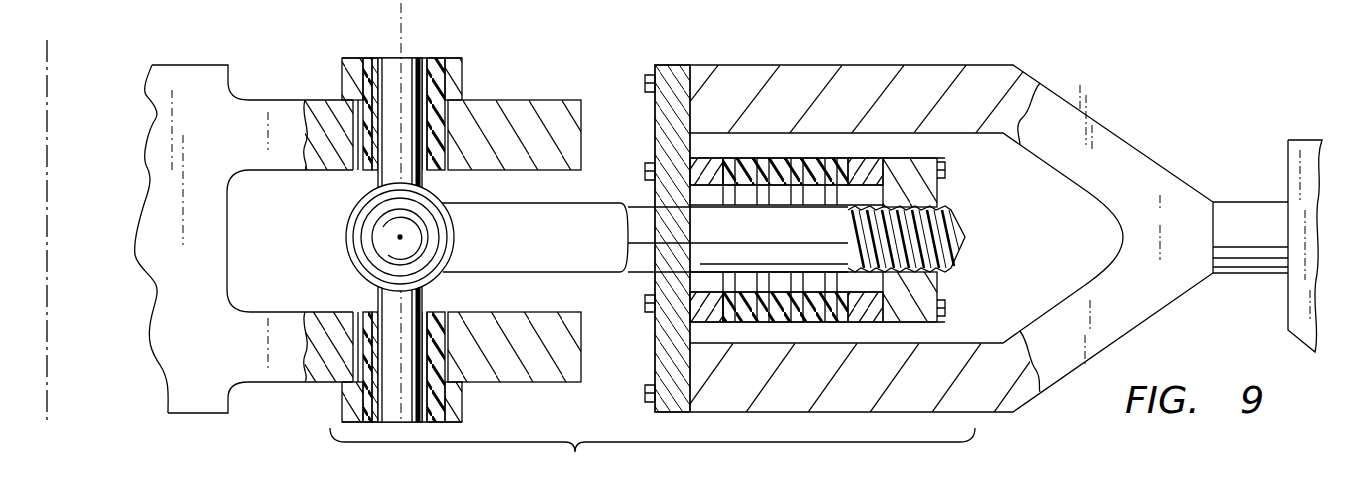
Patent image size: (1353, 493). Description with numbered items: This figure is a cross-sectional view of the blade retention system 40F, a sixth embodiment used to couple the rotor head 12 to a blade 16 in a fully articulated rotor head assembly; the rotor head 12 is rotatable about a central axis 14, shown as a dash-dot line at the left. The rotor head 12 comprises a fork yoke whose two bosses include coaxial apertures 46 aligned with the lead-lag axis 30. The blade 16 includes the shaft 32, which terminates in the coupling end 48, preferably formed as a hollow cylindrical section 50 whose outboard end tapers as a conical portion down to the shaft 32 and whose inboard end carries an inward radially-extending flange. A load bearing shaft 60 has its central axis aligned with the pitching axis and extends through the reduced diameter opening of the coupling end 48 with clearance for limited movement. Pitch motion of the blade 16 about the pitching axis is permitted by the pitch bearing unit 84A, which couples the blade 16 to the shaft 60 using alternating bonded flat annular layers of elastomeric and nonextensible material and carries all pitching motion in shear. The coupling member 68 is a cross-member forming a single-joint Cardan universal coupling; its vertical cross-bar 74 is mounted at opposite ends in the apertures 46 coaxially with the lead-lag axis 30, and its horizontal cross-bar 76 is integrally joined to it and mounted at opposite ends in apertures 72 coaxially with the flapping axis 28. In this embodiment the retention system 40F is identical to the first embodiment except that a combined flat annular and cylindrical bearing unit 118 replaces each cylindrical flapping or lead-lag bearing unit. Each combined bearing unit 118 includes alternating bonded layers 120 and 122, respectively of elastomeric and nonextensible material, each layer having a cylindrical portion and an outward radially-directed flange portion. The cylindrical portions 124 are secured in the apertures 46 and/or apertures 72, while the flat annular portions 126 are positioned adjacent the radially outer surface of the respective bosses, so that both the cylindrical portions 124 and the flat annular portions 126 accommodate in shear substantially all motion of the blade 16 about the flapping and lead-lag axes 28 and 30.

The central axis 14 is at (49, 83).
The rotor head 12 is at (236, 87).
The flat annular portions 126 is at (342, 76).
The vertical cross-bar 74 is at (392, 80).
The lead-lag axis 30 is at (412, 12).
The layers of nonextensible material 122 is at (462, 60).
The layers of elastomeric material 120 is at (462, 86).
The combined flat annular and cylindrical bearing unit 118 is at (354, 124).
The cylindrical portions 124 is at (378, 122).
The coupling member 68 is at (377, 179).
The apertures 46 is at (447, 163).
The flapping axis 28 is at (398, 237).
The apertures 72 is at (448, 244).
The horizontal cross-bar 76 is at (412, 255).
The load bearing shaft 60 is at (628, 205).
The coupling end 48 is at (957, 67).
The pitch bearing unit 84A is at (876, 161).
The shaft 32 is at (1252, 202).
The blade 16 is at (1290, 165).
The hollow cylindrical section 50 is at (995, 398).
The blade retention system 40F is at (652, 460).